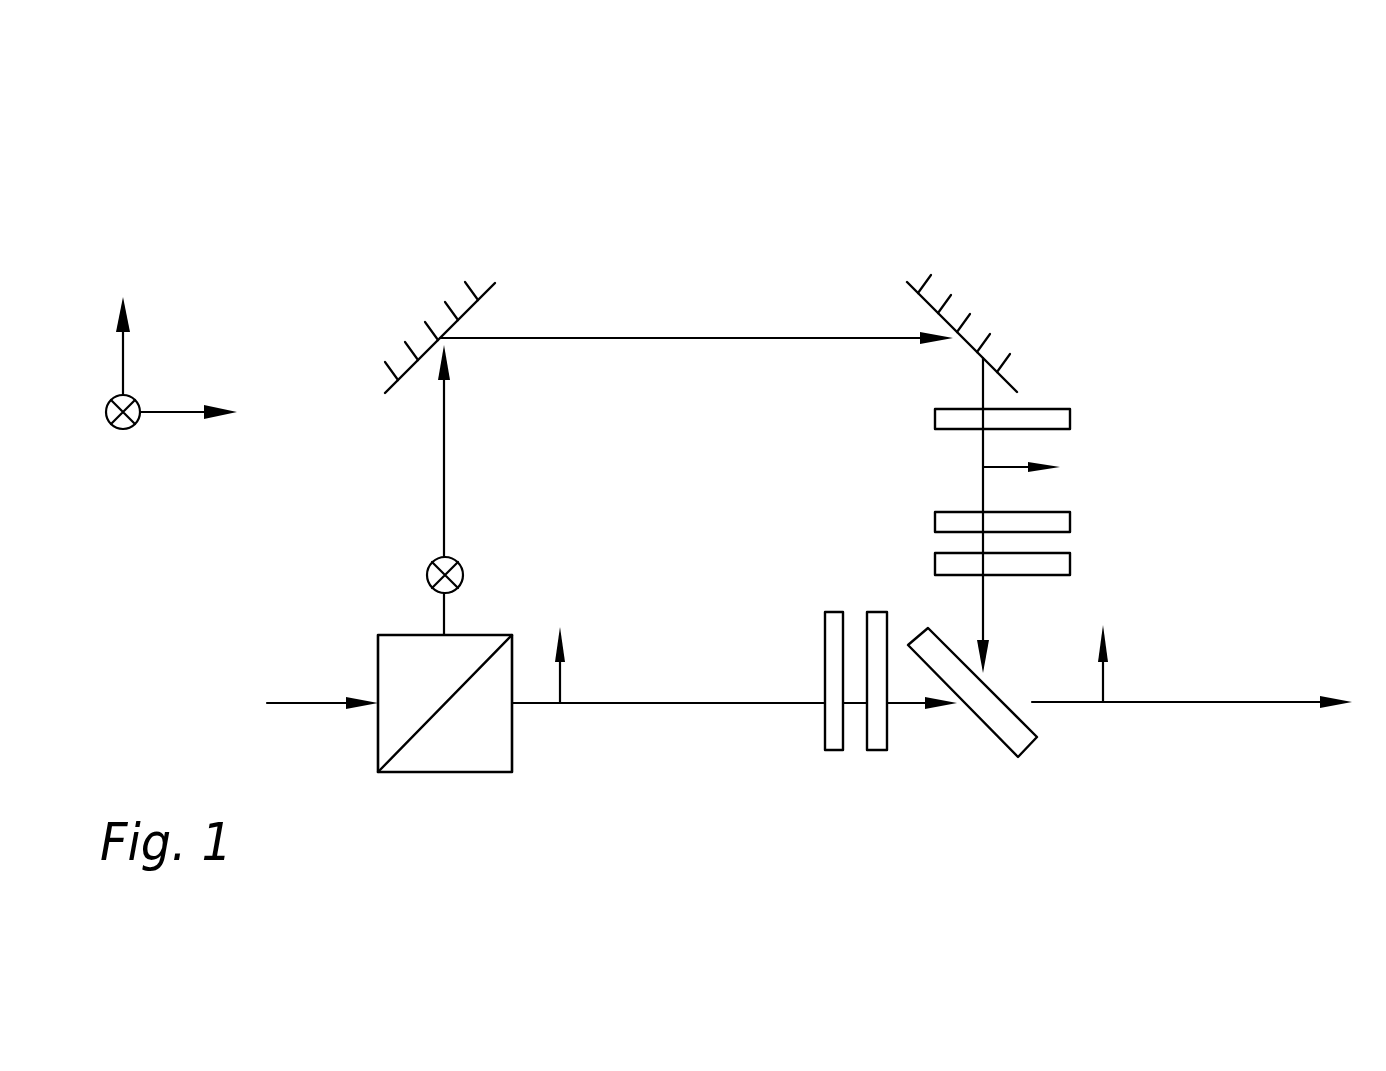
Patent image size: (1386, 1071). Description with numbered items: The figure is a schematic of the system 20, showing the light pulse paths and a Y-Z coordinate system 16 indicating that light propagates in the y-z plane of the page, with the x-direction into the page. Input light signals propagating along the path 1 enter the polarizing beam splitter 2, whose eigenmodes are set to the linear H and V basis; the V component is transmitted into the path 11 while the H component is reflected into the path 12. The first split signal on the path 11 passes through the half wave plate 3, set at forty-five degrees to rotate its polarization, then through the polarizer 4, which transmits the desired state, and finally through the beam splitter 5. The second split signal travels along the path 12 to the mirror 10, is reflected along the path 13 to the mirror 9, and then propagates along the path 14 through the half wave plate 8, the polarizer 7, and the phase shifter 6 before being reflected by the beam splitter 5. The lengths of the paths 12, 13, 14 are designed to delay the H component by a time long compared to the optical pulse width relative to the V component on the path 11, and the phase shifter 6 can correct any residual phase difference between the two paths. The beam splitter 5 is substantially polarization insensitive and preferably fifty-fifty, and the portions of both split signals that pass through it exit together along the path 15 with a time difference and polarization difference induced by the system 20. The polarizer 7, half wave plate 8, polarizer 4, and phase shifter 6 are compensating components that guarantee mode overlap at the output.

The path 1 is at (283, 705).
The polarizing beam splitter 2 is at (378, 747).
The half wave plate 3 is at (825, 725).
The polarizer 4 is at (870, 750).
The beam splitter 5 is at (1005, 753).
The phase shifter 6 is at (1072, 563).
The polarizer 7 is at (1072, 520).
The half wave plate 8 is at (1073, 413).
The mirror 9 is at (968, 318).
The mirror 10 is at (362, 368).
The path 11 is at (670, 705).
The path 12 is at (443, 455).
The path 13 is at (708, 338).
The path 14 is at (977, 442).
The path 15 is at (1295, 702).
The Y-Z coordinate system 16 is at (128, 365).
The system 20 is at (1083, 189).